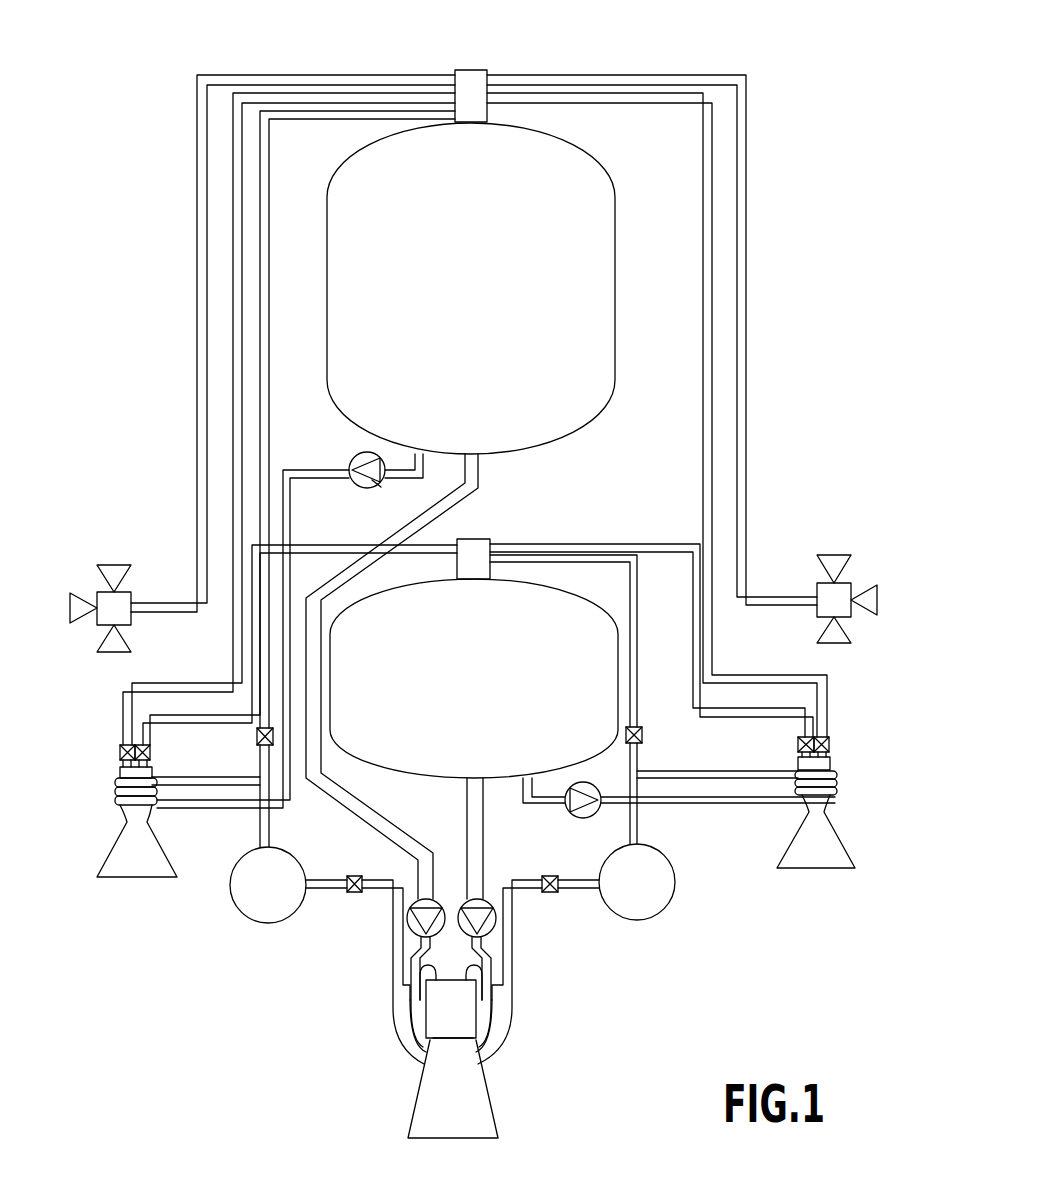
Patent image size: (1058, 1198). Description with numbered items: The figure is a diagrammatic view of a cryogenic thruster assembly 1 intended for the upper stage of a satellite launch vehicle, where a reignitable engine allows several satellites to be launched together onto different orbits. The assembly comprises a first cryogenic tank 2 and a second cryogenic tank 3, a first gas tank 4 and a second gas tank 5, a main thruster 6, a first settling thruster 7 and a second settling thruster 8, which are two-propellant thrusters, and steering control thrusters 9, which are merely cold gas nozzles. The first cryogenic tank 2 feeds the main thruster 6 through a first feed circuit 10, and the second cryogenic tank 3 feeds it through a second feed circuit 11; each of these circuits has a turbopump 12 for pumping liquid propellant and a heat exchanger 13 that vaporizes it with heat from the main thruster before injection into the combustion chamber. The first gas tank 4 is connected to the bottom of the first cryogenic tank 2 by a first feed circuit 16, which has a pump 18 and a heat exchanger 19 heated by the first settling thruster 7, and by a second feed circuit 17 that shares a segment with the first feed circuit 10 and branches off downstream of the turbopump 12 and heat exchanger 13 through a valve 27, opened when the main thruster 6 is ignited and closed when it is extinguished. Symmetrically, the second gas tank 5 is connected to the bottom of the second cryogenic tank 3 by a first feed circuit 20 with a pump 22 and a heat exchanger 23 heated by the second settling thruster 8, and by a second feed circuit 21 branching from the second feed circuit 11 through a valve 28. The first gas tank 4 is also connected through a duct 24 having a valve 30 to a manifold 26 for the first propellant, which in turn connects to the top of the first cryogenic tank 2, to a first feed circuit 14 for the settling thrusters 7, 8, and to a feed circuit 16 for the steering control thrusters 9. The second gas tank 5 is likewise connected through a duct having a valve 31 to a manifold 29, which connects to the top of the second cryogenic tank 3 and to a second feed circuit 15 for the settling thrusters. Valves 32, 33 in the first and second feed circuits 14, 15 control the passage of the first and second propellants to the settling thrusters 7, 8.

The cryogenic thruster assembly 1 is at (845, 170).
The first cryogenic tank 2 is at (452, 226).
The second cryogenic tank 3 is at (456, 644).
The first gas tank 4 is at (266, 914).
The second gas tank 5 is at (645, 902).
The main thruster 6 is at (482, 1108).
The first settling thruster 7 is at (120, 882).
The second settling thruster 8 is at (838, 878).
The steering control thrusters 9 is at (116, 560).
The first feed circuit of the main thruster 10 is at (370, 816).
The second feed circuit of the main thruster 11 is at (484, 840).
The turbopump 12 is at (445, 904).
The heat exchanger 13 is at (414, 1026).
The first feed circuit for the settling thrusters 14 is at (179, 685).
The second feed circuit for the settling thrusters 15 is at (327, 544).
The first feed circuit of the first gas tank 16 is at (199, 420).
The second feed circuit of the first gas tank 17 is at (393, 957).
The pump 18 is at (371, 488).
The heat exchanger 19 is at (113, 793).
The first feed circuit of the second gas tank 20 is at (695, 803).
The second feed circuit of the second gas tank 21 is at (512, 906).
The pump 22 is at (590, 812).
The heat exchanger 23 is at (845, 783).
The duct 24 is at (281, 432).
The manifold 26 is at (478, 90).
The valve 27 is at (353, 893).
The valve 28 is at (552, 893).
The manifold 29 is at (478, 556).
The valve 30 is at (257, 736).
The valve 31 is at (643, 735).
The valve 32 is at (120, 748).
The valve 33 is at (151, 750).